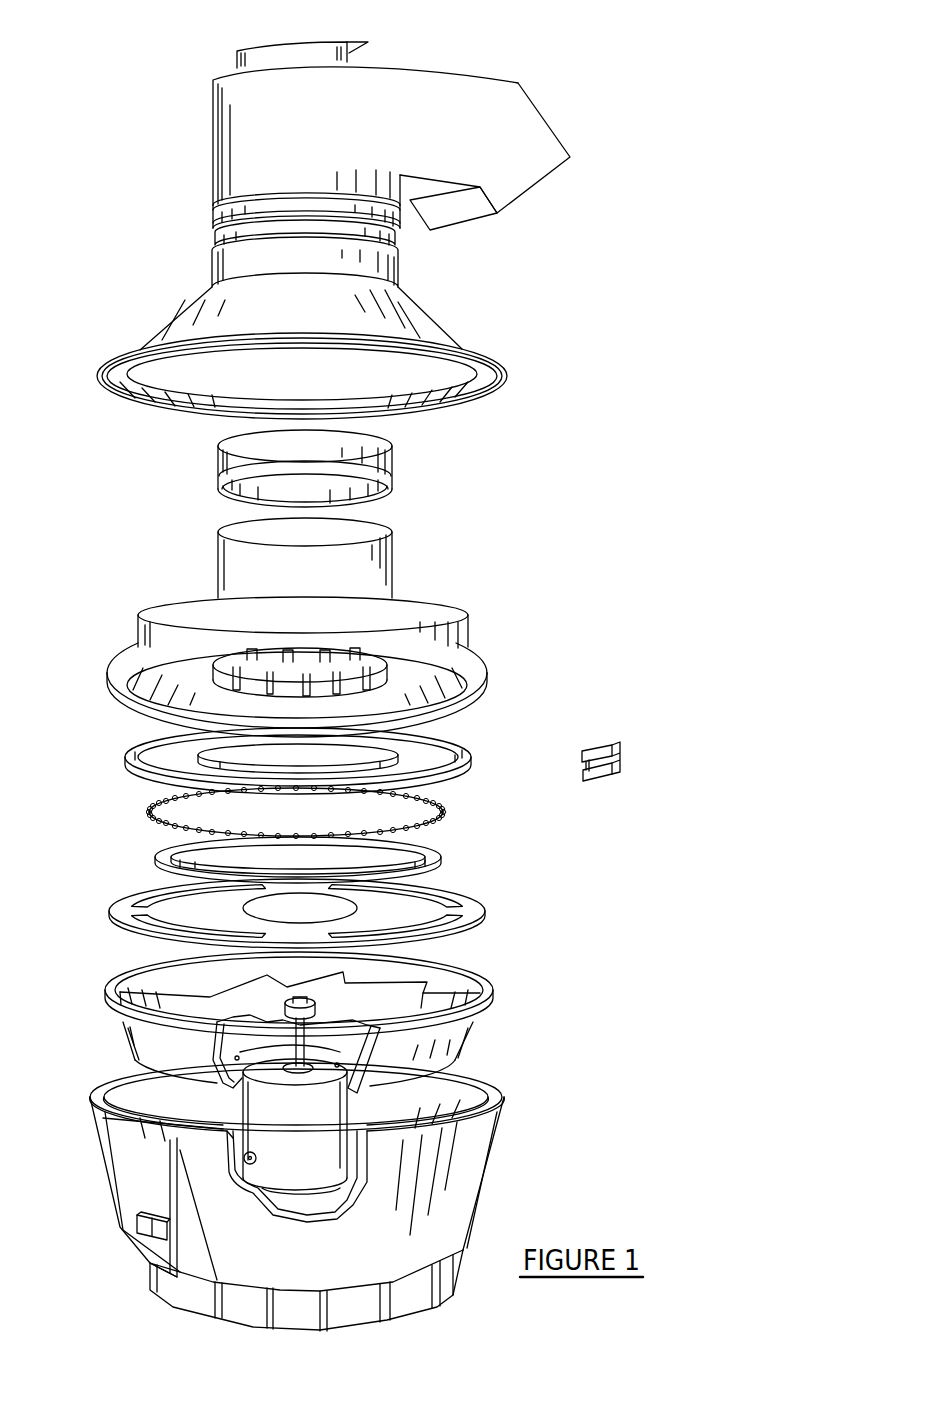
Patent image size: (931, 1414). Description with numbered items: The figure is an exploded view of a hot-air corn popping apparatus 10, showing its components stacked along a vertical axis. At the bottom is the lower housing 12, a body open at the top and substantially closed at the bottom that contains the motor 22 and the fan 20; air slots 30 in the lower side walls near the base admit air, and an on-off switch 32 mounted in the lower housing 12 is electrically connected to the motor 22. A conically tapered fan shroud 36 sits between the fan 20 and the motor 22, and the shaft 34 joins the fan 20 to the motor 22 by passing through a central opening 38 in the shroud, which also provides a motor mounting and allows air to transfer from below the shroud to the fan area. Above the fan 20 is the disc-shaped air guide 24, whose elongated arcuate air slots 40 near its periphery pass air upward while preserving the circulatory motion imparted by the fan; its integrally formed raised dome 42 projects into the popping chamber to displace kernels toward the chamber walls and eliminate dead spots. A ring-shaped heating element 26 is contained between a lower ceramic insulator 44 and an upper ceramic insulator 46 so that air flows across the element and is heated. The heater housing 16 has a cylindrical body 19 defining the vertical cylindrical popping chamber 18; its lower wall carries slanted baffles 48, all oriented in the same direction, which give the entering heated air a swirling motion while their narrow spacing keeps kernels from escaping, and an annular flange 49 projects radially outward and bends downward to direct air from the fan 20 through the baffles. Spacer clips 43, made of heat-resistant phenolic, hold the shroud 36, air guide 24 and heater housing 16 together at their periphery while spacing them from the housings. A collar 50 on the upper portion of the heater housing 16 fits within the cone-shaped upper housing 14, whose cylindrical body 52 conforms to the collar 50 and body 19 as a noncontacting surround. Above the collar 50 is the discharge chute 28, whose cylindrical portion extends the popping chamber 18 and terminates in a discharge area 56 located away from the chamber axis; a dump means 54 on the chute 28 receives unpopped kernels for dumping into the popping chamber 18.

The corn popping apparatus 10 is at (530, 497).
The lower housing 12 is at (442, 1182).
The upper housing 14 is at (207, 310).
The heater housing 16 is at (372, 562).
The popping chamber 18 is at (335, 668).
The cylindrical body 19 is at (233, 560).
The fan 20 is at (183, 1003).
The motor 22 is at (325, 1115).
The air guide 24 is at (477, 910).
The heating element 26 is at (445, 817).
The discharge chute 28 is at (240, 138).
The air slots 30 is at (392, 1306).
The switch 32 is at (135, 1227).
The shaft 34 is at (313, 1003).
The fan shroud 36 is at (143, 1038).
The central opening 38 is at (260, 1057).
The air slots 40 is at (132, 907).
The raised dome 42 is at (420, 933).
The spacer clips 43 is at (608, 783).
The lower ceramic insulator 44 is at (160, 852).
The upper ceramic insulator 46 is at (130, 755).
The slanted baffles 48 is at (217, 673).
The annular flange 49 is at (165, 623).
The collar 50 is at (235, 457).
The cylindrical body 52 is at (228, 262).
The dump means 54 is at (273, 50).
The discharge area 56 is at (533, 172).